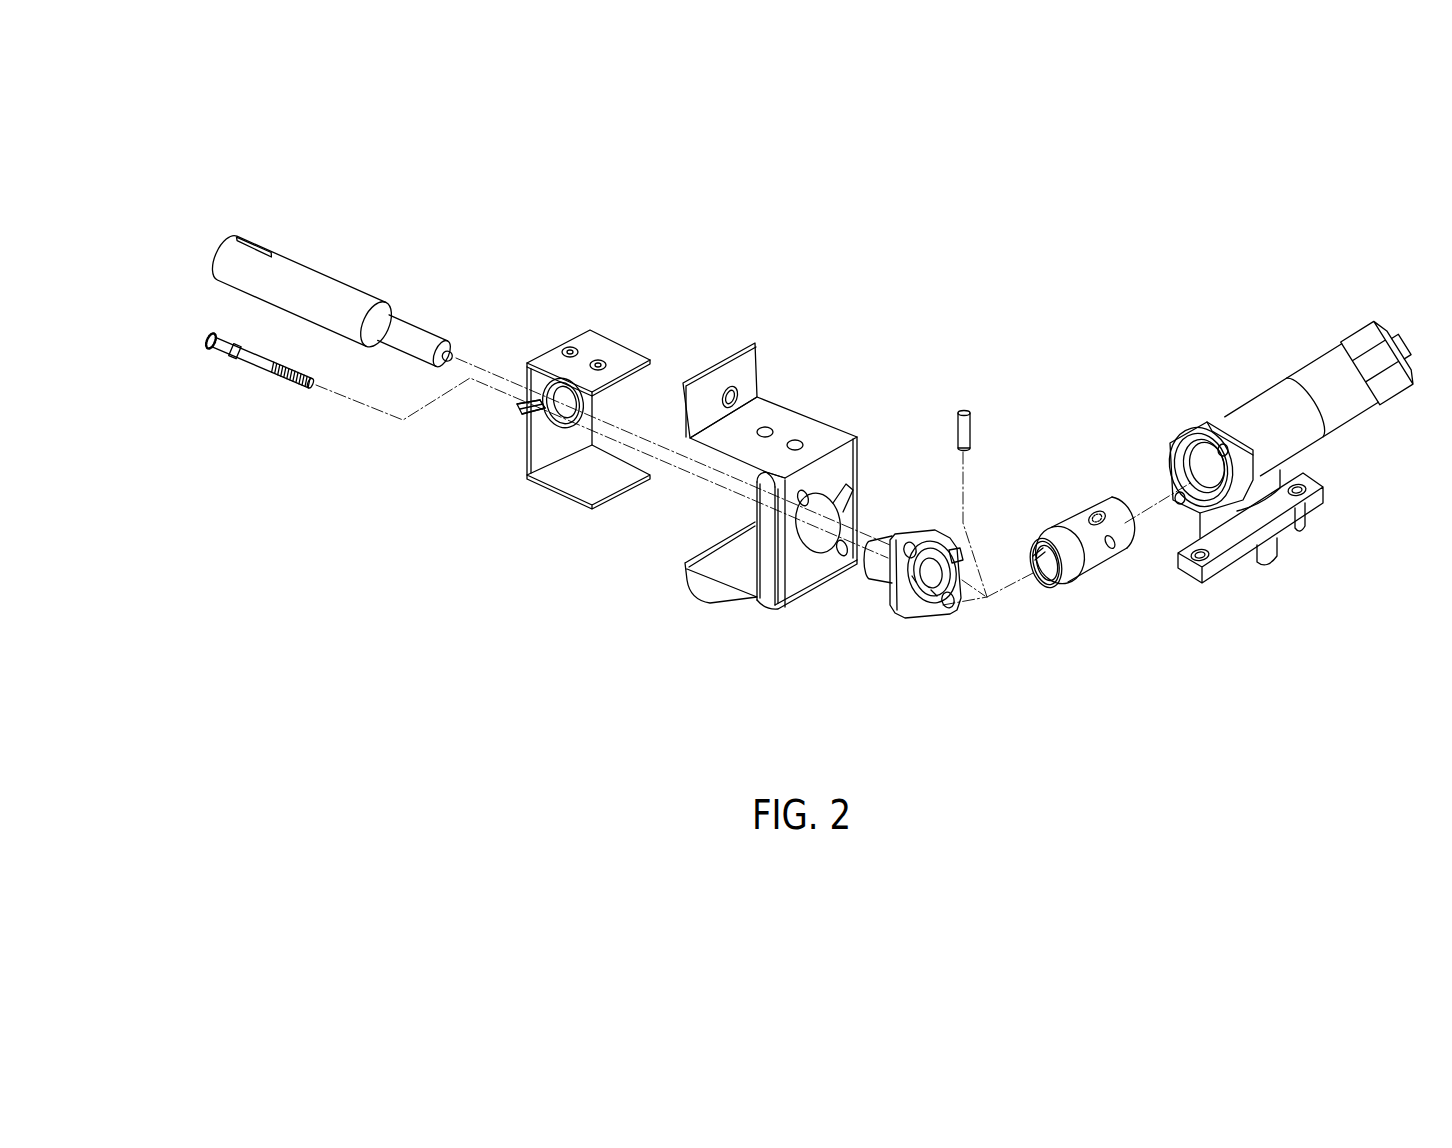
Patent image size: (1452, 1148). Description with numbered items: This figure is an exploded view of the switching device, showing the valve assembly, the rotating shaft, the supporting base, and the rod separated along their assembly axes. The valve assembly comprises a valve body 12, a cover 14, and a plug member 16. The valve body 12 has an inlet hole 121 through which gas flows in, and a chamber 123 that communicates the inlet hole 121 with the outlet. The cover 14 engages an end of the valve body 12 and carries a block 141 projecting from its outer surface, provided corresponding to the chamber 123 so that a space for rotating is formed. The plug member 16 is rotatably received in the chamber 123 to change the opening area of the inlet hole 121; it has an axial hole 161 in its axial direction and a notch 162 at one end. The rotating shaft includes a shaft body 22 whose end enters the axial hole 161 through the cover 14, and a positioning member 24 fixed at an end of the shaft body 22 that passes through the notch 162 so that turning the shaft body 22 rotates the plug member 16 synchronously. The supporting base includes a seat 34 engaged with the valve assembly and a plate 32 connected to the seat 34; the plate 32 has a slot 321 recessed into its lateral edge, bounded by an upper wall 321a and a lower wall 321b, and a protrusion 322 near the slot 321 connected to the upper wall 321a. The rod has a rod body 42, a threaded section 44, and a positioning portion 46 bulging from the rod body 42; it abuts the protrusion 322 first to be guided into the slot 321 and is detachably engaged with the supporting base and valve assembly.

The valve body 12 is at (1255, 410).
The inlet hole 121 is at (1260, 580).
The chamber 123 is at (1170, 450).
The cover 14 is at (880, 572).
The block 141 is at (950, 540).
The plug member 16 is at (1090, 552).
The axial hole 161 is at (1045, 585).
The notch 162 is at (1031, 552).
The shaft body 22 is at (410, 333).
The positioning member 24 is at (963, 410).
The plate 32 is at (610, 350).
The slot 321 is at (523, 417).
The upper wall 321a is at (545, 407).
The lower wall 321b is at (537, 420).
The protrusion 322 is at (518, 410).
The seat 34 is at (800, 430).
The rod body 42 is at (258, 367).
The threaded section 44 is at (296, 392).
The positioning portion 46 is at (232, 354).